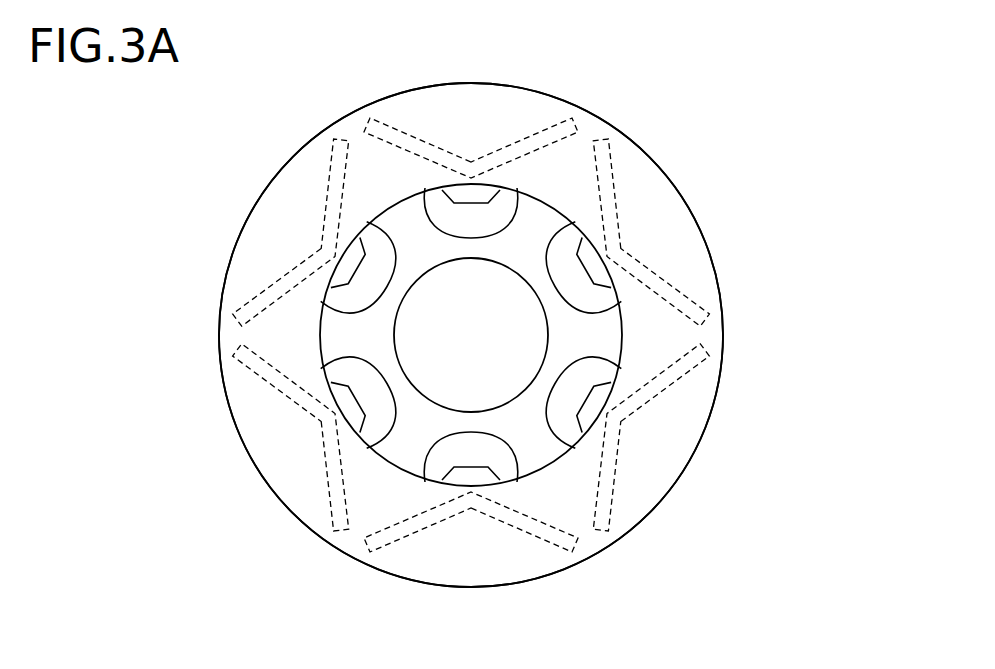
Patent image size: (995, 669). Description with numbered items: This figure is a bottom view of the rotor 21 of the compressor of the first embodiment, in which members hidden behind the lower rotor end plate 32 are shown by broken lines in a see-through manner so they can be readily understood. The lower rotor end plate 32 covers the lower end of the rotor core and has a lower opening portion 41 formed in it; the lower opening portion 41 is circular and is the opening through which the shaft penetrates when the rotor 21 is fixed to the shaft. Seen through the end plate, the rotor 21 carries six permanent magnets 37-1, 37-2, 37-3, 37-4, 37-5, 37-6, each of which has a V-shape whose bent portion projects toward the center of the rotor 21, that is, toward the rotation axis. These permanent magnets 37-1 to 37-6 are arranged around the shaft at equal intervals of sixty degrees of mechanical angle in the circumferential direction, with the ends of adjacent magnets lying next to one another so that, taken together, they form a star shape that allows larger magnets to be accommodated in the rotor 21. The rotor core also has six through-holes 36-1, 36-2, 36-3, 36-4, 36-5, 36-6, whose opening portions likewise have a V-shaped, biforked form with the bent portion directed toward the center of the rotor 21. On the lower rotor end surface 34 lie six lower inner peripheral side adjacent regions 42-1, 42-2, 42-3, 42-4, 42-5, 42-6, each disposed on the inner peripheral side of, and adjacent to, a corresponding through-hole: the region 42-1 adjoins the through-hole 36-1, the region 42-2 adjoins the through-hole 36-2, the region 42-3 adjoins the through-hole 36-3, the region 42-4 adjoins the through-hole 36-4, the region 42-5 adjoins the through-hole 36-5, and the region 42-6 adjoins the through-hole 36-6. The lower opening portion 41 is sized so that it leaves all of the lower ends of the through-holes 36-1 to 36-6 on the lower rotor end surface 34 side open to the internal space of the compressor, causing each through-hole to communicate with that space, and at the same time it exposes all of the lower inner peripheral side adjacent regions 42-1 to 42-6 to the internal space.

The rotor 21 is at (604, 99).
The lower rotor end plate 32 is at (318, 163).
The lower rotor end surface 34 is at (598, 319).
The lower opening portion 41 is at (622, 349).
The through-hole 36-1 is at (492, 215).
The through-hole 36-2 is at (597, 233).
The through-hole 36-3 is at (623, 448).
The through-hole 36-4 is at (492, 457).
The through-hole 36-5 is at (358, 443).
The through-hole 36-6 is at (355, 238).
The permanent magnet 37-1 is at (404, 133).
The permanent magnet 37-2 is at (612, 188).
The permanent magnet 37-3 is at (612, 480).
The permanent magnet 37-4 is at (398, 530).
The permanent magnet 37-5 is at (328, 488).
The permanent magnet 37-6 is at (328, 187).
The lower inner peripheral side adjacent region 42-1 is at (468, 250).
The lower inner peripheral side adjacent region 42-2 is at (568, 268).
The lower inner peripheral side adjacent region 42-3 is at (568, 407).
The lower inner peripheral side adjacent region 42-4 is at (468, 420).
The lower inner peripheral side adjacent region 42-5 is at (375, 405).
The lower inner peripheral side adjacent region 42-6 is at (330, 258).